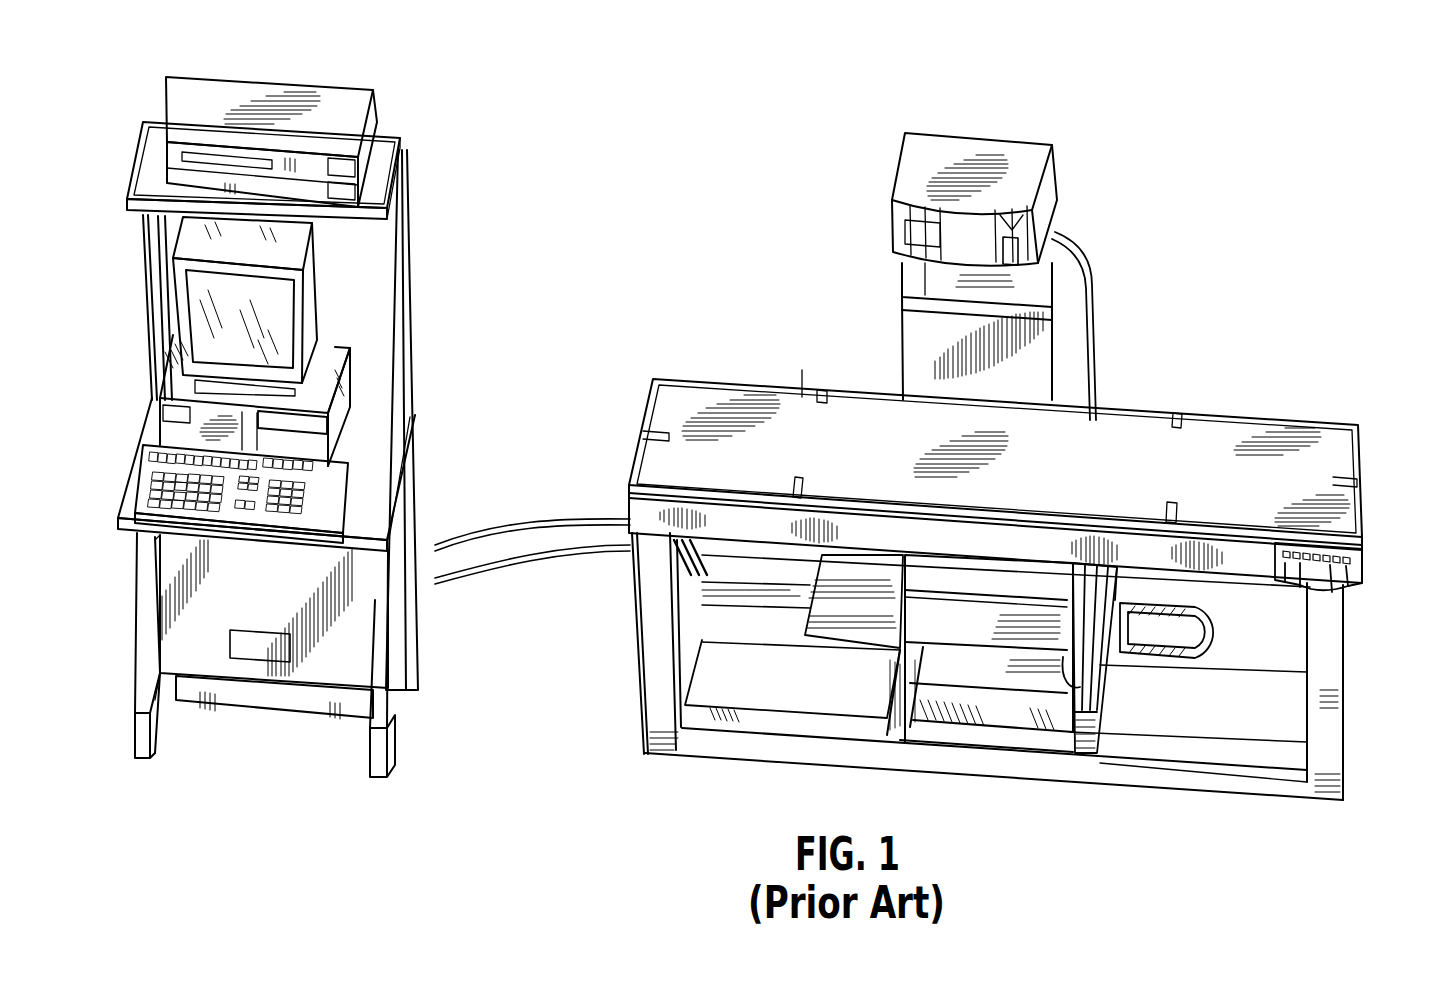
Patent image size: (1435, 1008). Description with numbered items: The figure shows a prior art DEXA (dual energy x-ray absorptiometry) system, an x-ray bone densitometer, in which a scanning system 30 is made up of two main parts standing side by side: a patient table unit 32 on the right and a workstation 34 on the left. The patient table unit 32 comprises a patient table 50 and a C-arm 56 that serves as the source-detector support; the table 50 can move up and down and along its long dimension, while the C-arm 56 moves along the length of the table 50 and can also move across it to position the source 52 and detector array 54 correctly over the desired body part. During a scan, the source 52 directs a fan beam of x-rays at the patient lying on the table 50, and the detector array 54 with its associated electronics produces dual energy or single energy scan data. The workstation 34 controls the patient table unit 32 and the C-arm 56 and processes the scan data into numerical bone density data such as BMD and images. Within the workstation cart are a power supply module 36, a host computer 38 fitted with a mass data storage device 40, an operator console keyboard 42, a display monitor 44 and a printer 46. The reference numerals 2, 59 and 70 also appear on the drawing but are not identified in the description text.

The work table top 2 is at (803, 398).
The scanning system 30 is at (665, 778).
The patient table unit 32 is at (1001, 483).
The workstation 34 is at (200, 748).
The power supply module 36 is at (291, 672).
The host computer 38 is at (345, 407).
The mass data storage device 40 is at (305, 435).
The operator console keyboard 42 is at (310, 485).
The display monitor 44 is at (298, 313).
The printer 46 is at (370, 150).
The patient table 50 is at (966, 548).
The source 52 is at (947, 625).
The detector array 54 is at (907, 188).
The C-arm 56 is at (1085, 297).
The slot 59 is at (1020, 248).
The control keypad 70 is at (1342, 585).